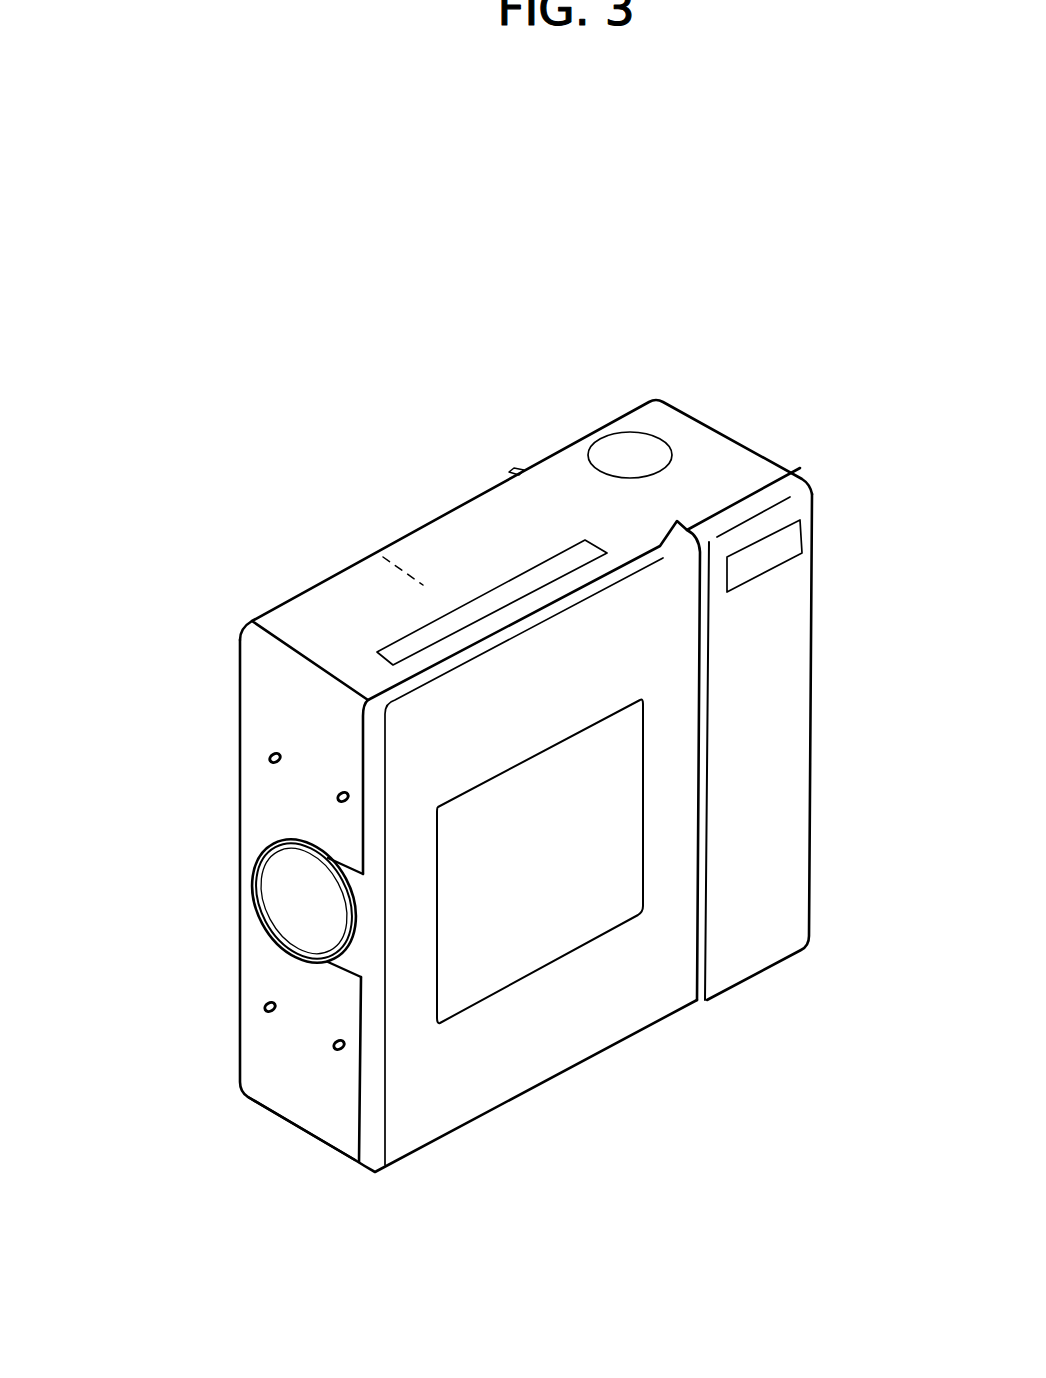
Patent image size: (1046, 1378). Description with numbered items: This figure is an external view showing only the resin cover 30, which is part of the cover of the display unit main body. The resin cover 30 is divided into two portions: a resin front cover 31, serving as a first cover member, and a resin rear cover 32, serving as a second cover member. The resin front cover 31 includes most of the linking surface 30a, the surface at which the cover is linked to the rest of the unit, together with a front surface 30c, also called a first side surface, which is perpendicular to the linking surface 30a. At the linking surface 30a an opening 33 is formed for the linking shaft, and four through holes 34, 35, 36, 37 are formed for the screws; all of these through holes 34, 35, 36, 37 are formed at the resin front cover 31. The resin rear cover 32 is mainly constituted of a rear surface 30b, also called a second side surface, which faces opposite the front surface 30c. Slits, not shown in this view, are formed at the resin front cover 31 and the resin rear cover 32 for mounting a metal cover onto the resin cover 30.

The resin cover 30 is at (741, 367).
The linking surface 30a is at (317, 1113).
The rear surface 30b is at (623, 1007).
The front surface 30c is at (383, 557).
The resin front cover 31 is at (265, 684).
The resin rear cover 32 is at (447, 1107).
The opening 33 is at (302, 913).
The through hole 34 is at (265, 755).
The through hole 35 is at (260, 1004).
The through hole 36 is at (333, 798).
The through hole 37 is at (333, 1047).